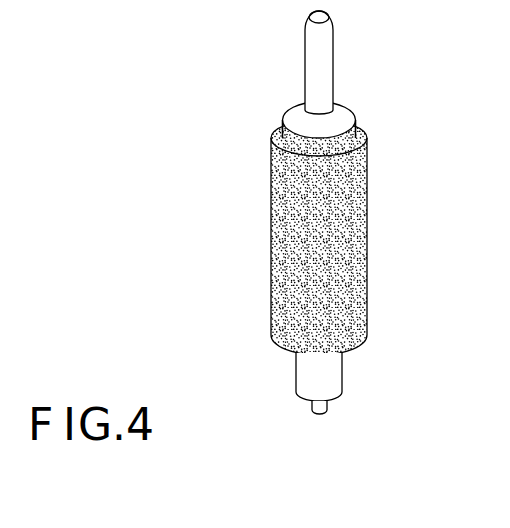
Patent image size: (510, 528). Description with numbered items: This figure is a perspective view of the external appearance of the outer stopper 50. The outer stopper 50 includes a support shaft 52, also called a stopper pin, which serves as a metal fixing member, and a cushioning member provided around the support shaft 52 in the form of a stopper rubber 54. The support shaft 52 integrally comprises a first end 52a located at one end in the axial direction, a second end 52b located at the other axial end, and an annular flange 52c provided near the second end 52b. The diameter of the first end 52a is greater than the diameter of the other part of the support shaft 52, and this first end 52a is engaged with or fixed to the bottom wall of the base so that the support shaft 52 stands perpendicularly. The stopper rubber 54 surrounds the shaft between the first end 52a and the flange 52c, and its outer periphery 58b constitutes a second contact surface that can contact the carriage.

The outer stopper 50 is at (250, 197).
The support shaft 52 is at (331, 209).
The first end 52a is at (330, 378).
The second end 52b is at (305, 29).
The annular flange 52c is at (348, 116).
The stopper rubber 54 is at (343, 213).
The outer periphery 58b is at (345, 297).